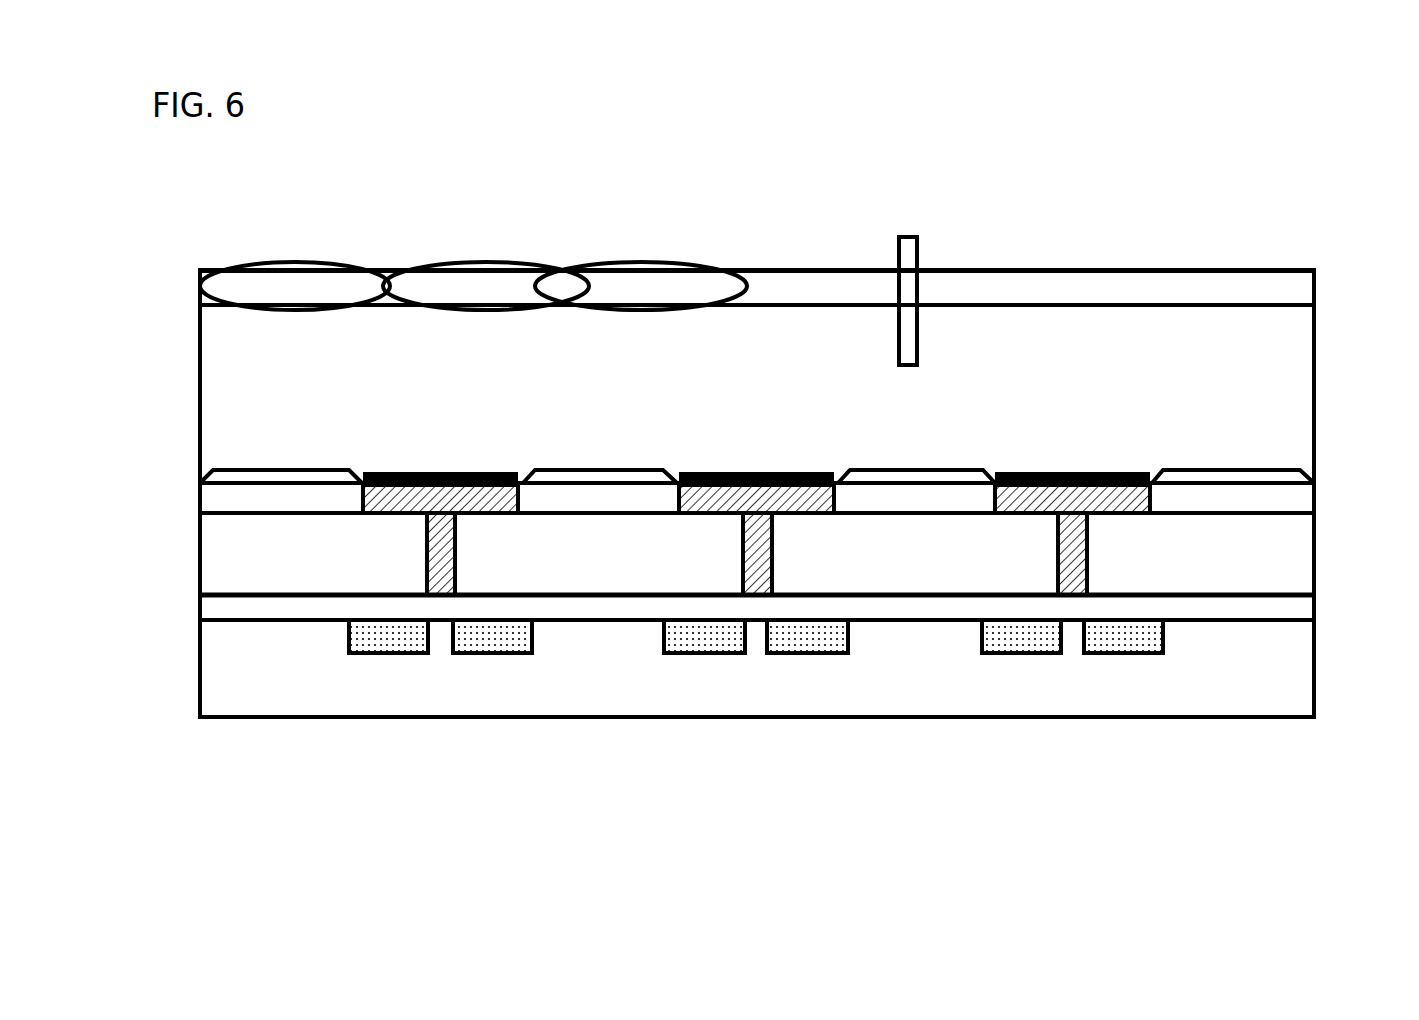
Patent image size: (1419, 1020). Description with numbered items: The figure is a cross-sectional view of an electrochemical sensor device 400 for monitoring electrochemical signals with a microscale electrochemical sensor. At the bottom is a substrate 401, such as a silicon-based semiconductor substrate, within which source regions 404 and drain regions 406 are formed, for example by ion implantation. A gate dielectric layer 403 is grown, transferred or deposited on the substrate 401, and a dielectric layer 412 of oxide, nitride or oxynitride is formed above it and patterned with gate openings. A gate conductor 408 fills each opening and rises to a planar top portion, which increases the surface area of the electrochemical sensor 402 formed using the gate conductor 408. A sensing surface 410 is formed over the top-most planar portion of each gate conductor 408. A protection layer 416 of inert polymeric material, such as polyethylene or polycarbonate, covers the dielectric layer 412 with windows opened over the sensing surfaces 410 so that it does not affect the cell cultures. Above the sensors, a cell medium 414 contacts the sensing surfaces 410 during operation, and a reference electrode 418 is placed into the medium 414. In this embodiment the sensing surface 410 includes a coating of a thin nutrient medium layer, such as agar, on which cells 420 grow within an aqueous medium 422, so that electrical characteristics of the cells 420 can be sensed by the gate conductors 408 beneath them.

The electrochemical sensor device 400 is at (1221, 141).
The substrate 401 is at (228, 696).
The electrochemical sensor 402 is at (1080, 460).
The gate dielectric layer 403 is at (228, 604).
The source region 404 is at (395, 653).
The drain region 406 is at (492, 637).
The gate conductor 408 is at (427, 540).
The sensing surface 410 is at (400, 473).
The dielectric layer 412 is at (235, 500).
The cell medium 414 is at (240, 352).
The protection layer 416 is at (240, 475).
The reference electrode 418 is at (912, 238).
The cells 420 is at (614, 273).
The aqueous medium 422 is at (1247, 296).